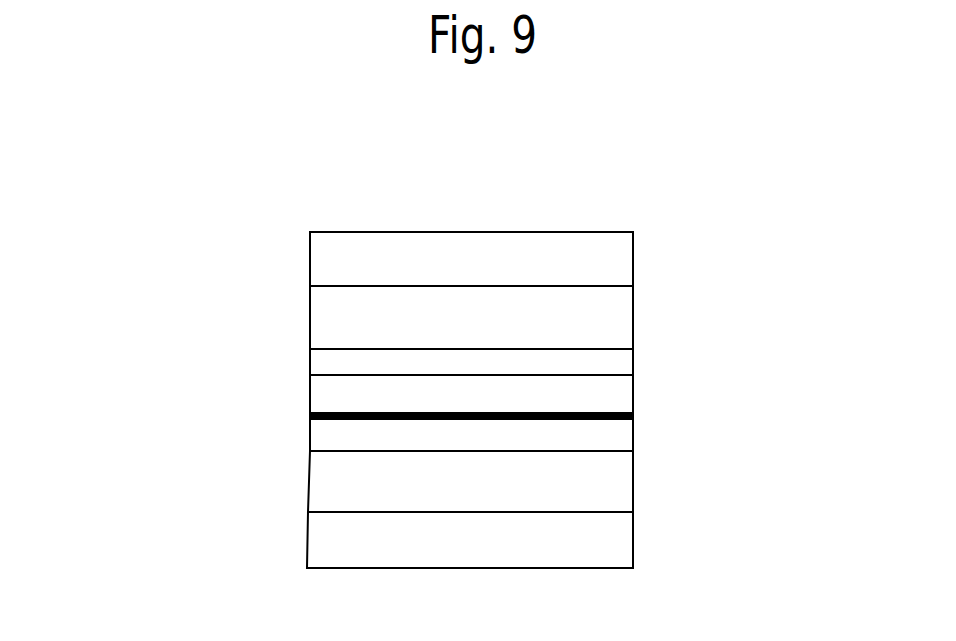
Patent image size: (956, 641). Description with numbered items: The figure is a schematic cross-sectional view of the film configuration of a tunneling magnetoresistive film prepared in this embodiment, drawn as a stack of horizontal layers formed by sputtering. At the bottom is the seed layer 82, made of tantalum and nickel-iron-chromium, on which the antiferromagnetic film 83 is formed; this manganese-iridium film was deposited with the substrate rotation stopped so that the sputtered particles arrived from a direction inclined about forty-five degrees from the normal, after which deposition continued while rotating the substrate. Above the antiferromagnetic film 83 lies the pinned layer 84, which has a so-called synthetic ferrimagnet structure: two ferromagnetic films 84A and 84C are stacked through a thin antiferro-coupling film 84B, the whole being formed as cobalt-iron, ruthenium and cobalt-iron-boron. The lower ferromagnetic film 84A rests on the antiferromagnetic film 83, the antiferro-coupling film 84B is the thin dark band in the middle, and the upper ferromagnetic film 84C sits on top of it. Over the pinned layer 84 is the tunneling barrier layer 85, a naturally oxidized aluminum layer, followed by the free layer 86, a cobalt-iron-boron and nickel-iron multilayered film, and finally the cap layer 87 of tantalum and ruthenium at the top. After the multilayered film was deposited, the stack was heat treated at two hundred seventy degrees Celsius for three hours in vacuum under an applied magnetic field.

The cap layer 87 is at (527, 247).
The free layer 86 is at (618, 308).
The tunneling barrier layer 85 is at (617, 362).
The pinned layer 84 is at (140, 335).
The ferromagnetic film 84C is at (333, 397).
The antiferro-coupling film 84B is at (307, 420).
The ferromagnetic film 84A is at (333, 445).
The antiferromagnetic film 83 is at (608, 475).
The seed layer 82 is at (608, 547).